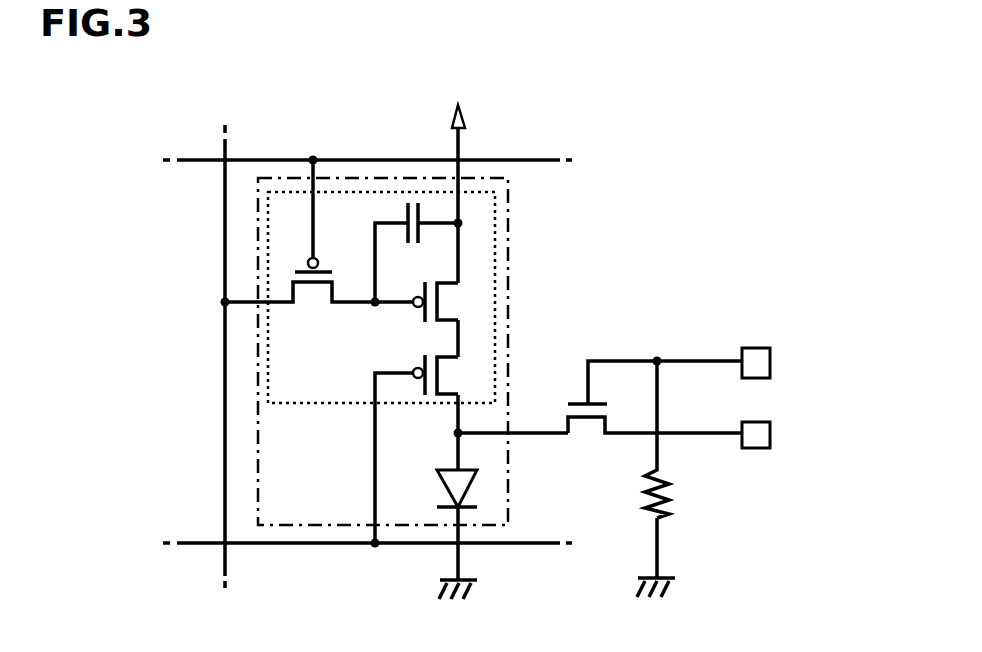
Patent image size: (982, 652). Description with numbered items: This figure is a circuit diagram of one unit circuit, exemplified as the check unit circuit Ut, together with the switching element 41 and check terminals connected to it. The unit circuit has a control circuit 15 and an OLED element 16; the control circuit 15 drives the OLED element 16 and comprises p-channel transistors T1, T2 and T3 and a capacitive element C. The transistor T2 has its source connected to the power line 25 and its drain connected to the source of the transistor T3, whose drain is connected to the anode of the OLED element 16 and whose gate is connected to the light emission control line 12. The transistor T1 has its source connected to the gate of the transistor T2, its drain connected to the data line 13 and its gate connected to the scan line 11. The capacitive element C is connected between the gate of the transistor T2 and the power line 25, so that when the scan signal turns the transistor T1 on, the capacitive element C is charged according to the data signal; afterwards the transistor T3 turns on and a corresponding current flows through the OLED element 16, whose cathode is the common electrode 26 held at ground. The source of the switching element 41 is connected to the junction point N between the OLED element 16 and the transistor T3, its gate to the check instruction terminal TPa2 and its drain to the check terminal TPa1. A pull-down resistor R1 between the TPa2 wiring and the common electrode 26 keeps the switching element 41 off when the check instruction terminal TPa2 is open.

The scan line 11 is at (512, 160).
The light emission control line 12 is at (295, 545).
The data line 13 is at (230, 150).
The control circuit 15 is at (495, 246).
The OLED element 16 is at (437, 482).
The power line 25 is at (462, 150).
The common electrode 26 is at (462, 558).
The switching element 41 is at (585, 440).
The capacitive element C is at (408, 205).
The transistor T1 is at (313, 306).
The transistor T2 is at (450, 300).
The transistor T3 is at (450, 370).
The junction point N is at (455, 433).
The resistor R1 is at (670, 494).
The check terminal TPa1 is at (760, 448).
The check instruction terminal TPa2 is at (760, 348).
The check unit circuit Ut is at (258, 480).